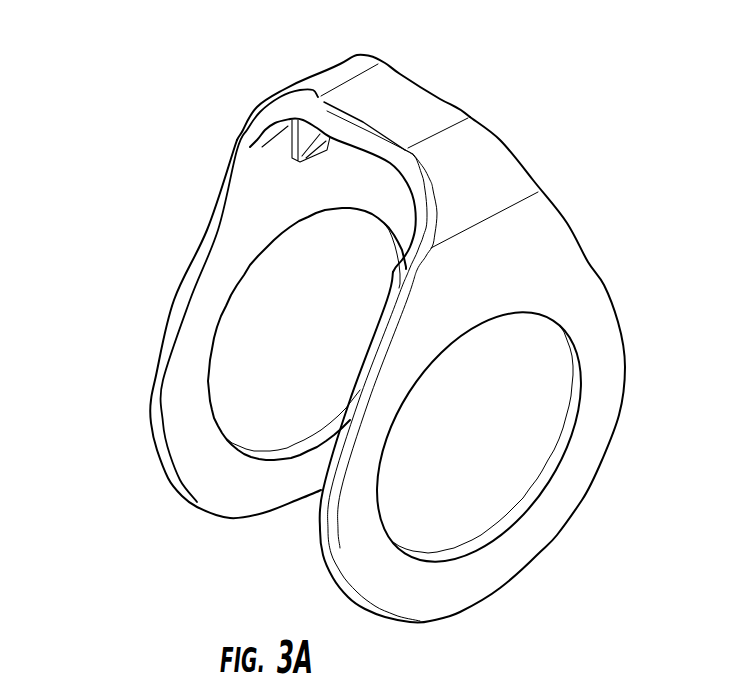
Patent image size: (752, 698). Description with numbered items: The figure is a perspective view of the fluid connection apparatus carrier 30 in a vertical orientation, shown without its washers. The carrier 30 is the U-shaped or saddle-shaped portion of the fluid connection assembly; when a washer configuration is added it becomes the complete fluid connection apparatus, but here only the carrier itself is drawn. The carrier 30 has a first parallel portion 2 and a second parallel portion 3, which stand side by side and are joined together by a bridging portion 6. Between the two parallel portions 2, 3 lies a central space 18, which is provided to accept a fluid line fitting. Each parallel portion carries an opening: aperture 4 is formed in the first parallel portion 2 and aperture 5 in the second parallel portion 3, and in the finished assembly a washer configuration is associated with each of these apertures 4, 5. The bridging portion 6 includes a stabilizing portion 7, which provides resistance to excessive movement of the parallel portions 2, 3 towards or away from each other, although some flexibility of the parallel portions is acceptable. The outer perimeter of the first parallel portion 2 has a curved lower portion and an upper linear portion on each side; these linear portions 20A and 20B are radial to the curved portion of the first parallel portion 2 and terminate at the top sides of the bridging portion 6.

The first parallel portion 2 is at (513, 271).
The second parallel portion 3 is at (233, 249).
The aperture 4 is at (492, 483).
The aperture 5 is at (235, 395).
The bridging portion 6 is at (393, 93).
The stabilizing portion 7 is at (303, 138).
The central space 18 is at (286, 539).
The linear portion 20A is at (573, 228).
The linear portion 20B is at (362, 370).
The carrier 30 is at (560, 108).